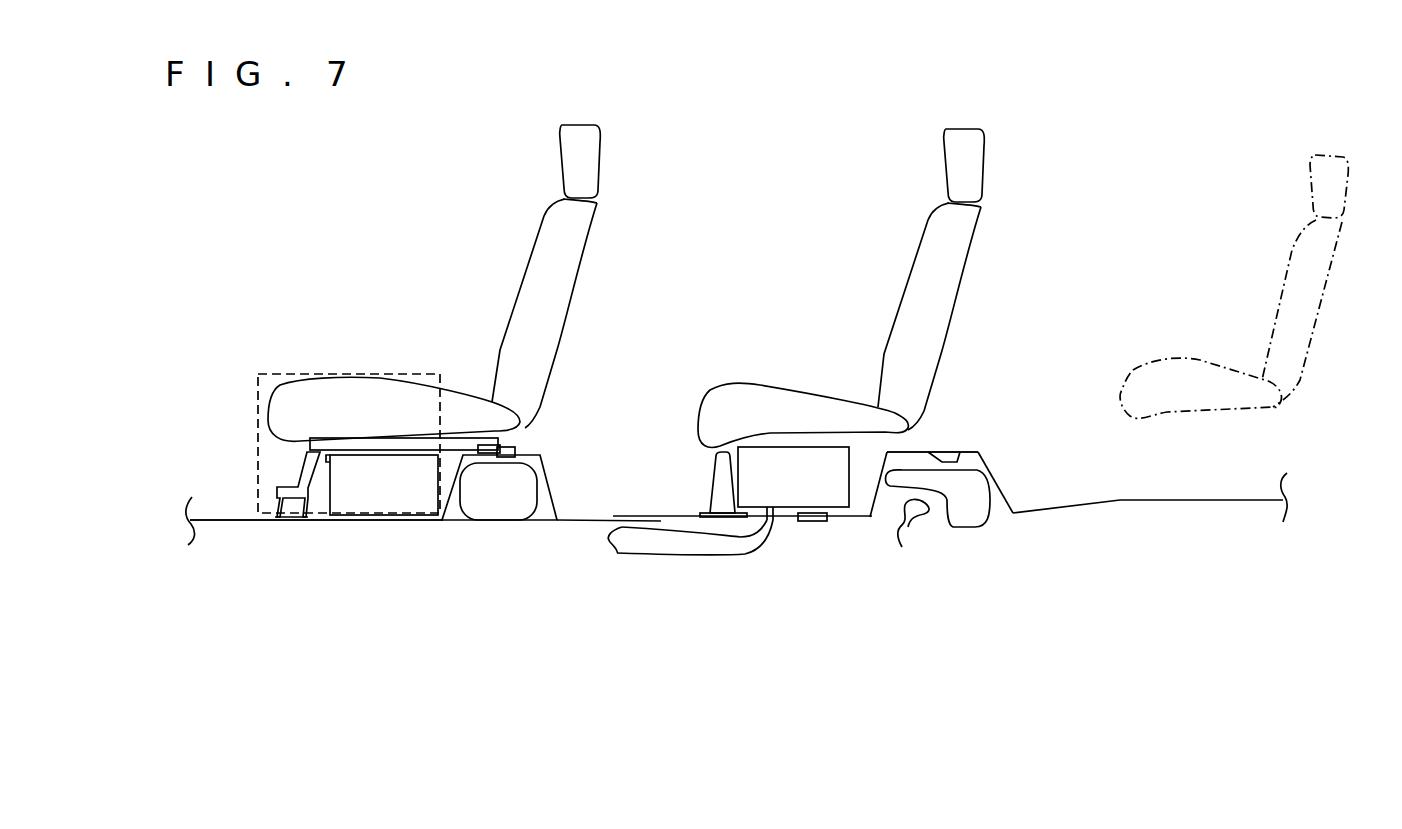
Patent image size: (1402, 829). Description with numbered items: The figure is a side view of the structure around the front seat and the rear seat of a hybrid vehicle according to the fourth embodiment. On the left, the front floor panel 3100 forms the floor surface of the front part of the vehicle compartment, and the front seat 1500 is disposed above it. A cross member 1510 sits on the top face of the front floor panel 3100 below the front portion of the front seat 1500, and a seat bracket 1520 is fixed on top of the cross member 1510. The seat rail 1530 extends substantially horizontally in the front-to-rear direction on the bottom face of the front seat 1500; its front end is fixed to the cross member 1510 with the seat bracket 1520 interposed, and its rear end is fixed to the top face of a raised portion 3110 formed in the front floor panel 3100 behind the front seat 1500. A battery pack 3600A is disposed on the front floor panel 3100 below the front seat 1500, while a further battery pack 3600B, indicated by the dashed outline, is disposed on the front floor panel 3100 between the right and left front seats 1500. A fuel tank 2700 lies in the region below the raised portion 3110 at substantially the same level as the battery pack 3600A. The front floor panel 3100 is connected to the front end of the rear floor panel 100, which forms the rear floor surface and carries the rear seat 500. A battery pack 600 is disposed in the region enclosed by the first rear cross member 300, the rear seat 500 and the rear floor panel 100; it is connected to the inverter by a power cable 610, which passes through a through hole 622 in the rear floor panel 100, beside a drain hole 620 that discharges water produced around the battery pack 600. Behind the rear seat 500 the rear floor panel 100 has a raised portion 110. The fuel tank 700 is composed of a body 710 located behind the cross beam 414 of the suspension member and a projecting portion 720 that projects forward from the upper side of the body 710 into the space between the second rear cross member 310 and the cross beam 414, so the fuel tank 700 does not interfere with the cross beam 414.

The rear floor panel 100 is at (1072, 508).
The raised portion 110 is at (958, 452).
The first rear cross member 300 is at (713, 478).
The second rear cross member 310 is at (987, 462).
The cross beam 414 is at (902, 548).
The rear seat 500 is at (723, 383).
The battery pack 600 is at (797, 448).
The power cable 610 is at (655, 555).
The drain hole 620 is at (812, 521).
The through hole 622 is at (770, 522).
The fuel tank 700 is at (948, 533).
The body 710 is at (968, 527).
The projecting portion 720 is at (905, 452).
The front seat 1500 is at (278, 395).
The cross member 1510 is at (278, 503).
The seat bracket 1520 is at (304, 474).
The seat rail 1530 is at (410, 440).
The fuel tank 2700 is at (497, 522).
The front floor panel 3100 is at (217, 523).
The raised portion 3110 is at (530, 455).
The battery pack 3600A is at (380, 514).
The battery pack 3600B is at (347, 376).